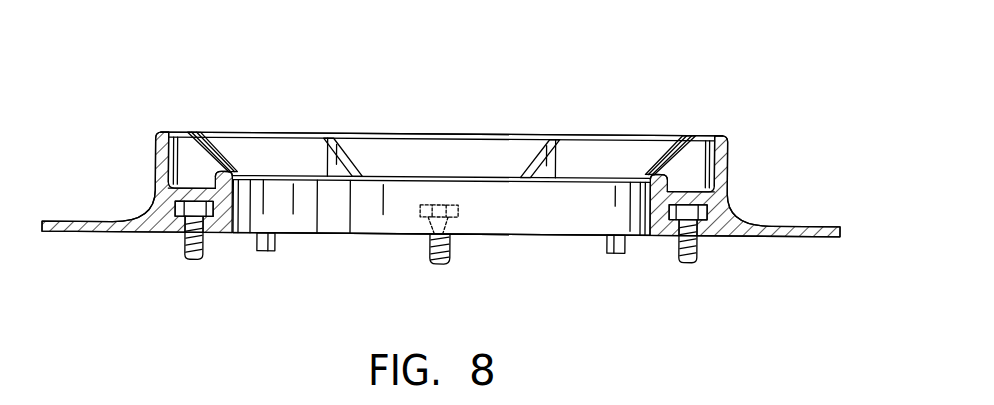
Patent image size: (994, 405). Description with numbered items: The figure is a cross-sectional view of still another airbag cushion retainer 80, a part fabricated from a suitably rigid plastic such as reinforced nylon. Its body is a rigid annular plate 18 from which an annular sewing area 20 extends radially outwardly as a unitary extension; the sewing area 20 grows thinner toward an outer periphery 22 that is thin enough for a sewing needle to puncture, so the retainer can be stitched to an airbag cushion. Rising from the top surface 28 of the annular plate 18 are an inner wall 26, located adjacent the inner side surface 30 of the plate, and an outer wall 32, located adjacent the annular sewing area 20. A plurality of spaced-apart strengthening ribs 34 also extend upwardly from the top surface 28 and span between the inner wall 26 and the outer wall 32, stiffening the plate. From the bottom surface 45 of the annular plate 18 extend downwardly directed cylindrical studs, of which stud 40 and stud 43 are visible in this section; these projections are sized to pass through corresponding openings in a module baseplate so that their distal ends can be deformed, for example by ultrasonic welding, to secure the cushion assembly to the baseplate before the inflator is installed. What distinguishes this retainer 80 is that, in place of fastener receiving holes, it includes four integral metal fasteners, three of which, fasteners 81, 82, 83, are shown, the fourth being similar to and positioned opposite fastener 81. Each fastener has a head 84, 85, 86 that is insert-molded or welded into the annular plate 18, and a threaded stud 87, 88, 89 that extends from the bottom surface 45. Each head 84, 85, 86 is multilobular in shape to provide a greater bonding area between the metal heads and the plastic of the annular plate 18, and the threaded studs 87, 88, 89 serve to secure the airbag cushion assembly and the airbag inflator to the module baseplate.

The airbag cushion retainer 80 is at (702, 58).
The annular plate 18 is at (182, 186).
The annular sewing area 20 is at (747, 225).
The outer periphery 22 is at (802, 225).
The inner wall 26 is at (228, 173).
The top surface 28 is at (204, 189).
The inner side surface 30 is at (650, 206).
The outer wall 32 is at (157, 138).
The strengthening ribs 34 is at (220, 158).
The cylindrical stud 40 is at (604, 253).
The cylindrical stud 43 is at (264, 253).
The bottom surface 45 is at (530, 236).
The fastener 81 is at (429, 267).
The fastener 82 is at (697, 266).
The fastener 83 is at (179, 257).
The head 84 is at (458, 213).
The head 85 is at (668, 221).
The head 86 is at (204, 219).
The threaded stud 87 is at (449, 261).
The threaded stud 88 is at (686, 263).
The threaded stud 89 is at (188, 259).